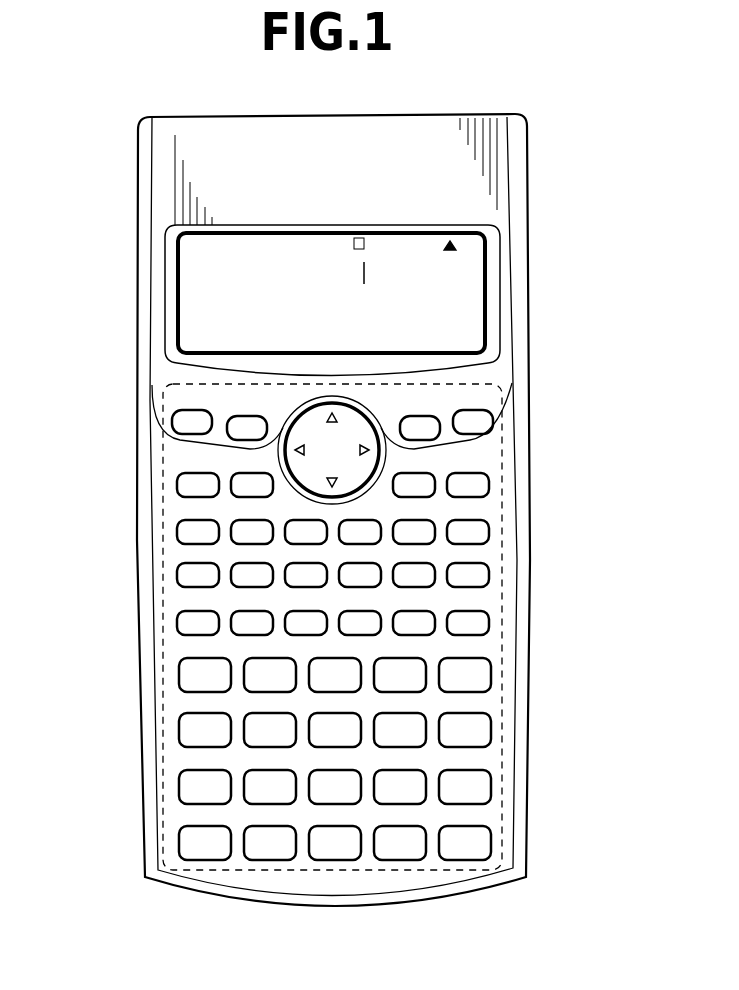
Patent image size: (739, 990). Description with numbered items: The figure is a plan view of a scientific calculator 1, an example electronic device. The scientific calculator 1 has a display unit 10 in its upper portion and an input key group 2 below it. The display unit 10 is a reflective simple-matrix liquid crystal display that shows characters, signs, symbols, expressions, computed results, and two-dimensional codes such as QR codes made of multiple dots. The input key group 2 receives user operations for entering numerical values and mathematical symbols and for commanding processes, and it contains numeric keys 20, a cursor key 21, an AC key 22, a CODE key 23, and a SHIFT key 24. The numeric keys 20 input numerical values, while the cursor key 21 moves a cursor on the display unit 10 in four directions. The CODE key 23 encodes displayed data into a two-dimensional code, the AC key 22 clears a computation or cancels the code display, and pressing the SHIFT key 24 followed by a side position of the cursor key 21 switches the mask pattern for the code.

The scientific calculator 1 is at (120, 184).
The display unit 10 is at (485, 272).
The input key group 2 is at (503, 590).
The SHIFT key 24 is at (185, 424).
The CODE key 23 is at (240, 432).
The cursor key 21 is at (310, 470).
The AC key 22 is at (487, 677).
The numeric keys 20 is at (190, 726).